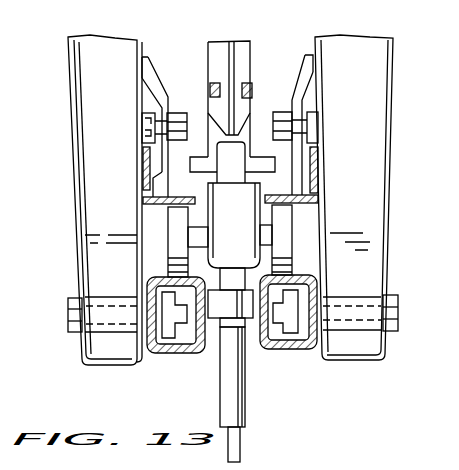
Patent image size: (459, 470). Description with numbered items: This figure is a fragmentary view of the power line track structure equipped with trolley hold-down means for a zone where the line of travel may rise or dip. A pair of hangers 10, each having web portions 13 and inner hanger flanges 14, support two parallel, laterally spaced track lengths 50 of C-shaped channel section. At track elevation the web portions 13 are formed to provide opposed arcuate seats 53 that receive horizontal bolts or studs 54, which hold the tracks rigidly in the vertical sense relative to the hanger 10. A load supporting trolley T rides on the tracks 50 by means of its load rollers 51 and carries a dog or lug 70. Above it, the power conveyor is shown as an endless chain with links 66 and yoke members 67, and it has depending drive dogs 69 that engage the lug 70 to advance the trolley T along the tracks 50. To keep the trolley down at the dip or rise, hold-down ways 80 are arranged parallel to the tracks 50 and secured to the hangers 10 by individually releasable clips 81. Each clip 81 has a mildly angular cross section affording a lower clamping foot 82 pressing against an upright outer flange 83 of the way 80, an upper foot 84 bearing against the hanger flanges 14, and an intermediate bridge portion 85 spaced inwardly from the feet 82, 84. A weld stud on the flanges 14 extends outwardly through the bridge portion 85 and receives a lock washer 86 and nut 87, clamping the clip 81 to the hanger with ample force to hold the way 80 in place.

The hanger 10 is at (78, 204).
The web portion 13 is at (82, 70).
The inner hanger flange 14 is at (137, 100).
The load supporting trolley T is at (306, 240).
The track length 50 is at (193, 348).
The load roller 51 is at (177, 247).
The arcuate seat 53 is at (118, 332).
The horizontal bolt or stud 54 is at (80, 332).
The chain link 66 is at (248, 90).
The yoke member 67 is at (218, 58).
The drive dog 69 is at (262, 165).
The dog or lug 70 is at (240, 169).
The hold-down way 80 is at (152, 205).
The clip 81 is at (150, 85).
The lower clamping foot 82 is at (158, 188).
The upright outer flange 83 is at (148, 163).
The upper foot 84 is at (147, 67).
The intermediate bridge portion 85 is at (162, 110).
The lock washer 86 is at (170, 140).
The nut 87 is at (177, 128).